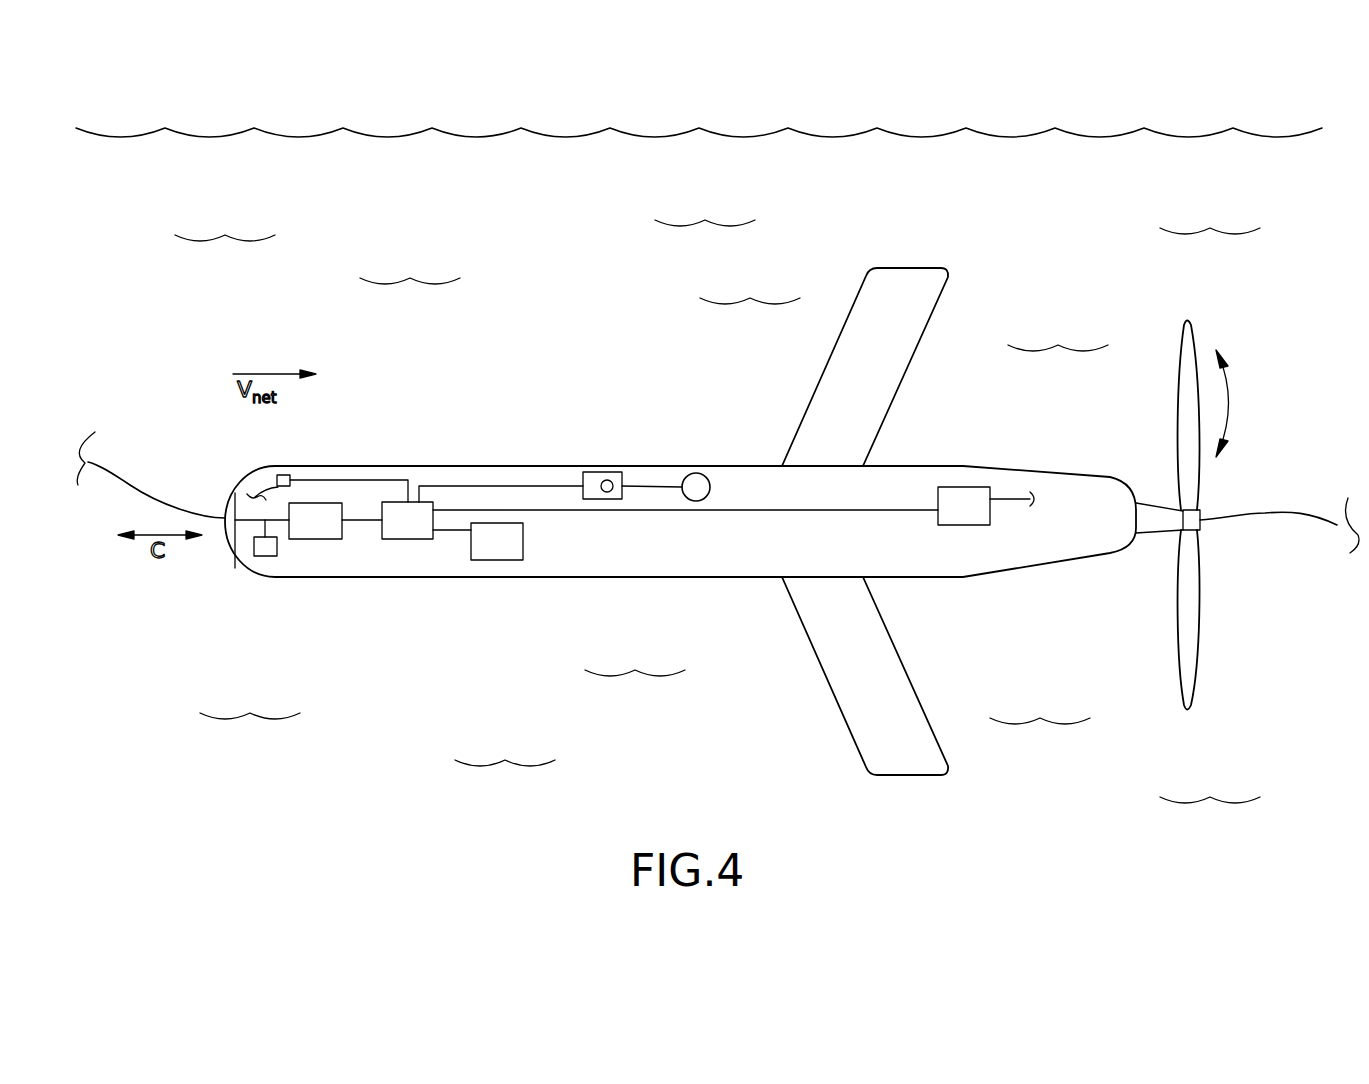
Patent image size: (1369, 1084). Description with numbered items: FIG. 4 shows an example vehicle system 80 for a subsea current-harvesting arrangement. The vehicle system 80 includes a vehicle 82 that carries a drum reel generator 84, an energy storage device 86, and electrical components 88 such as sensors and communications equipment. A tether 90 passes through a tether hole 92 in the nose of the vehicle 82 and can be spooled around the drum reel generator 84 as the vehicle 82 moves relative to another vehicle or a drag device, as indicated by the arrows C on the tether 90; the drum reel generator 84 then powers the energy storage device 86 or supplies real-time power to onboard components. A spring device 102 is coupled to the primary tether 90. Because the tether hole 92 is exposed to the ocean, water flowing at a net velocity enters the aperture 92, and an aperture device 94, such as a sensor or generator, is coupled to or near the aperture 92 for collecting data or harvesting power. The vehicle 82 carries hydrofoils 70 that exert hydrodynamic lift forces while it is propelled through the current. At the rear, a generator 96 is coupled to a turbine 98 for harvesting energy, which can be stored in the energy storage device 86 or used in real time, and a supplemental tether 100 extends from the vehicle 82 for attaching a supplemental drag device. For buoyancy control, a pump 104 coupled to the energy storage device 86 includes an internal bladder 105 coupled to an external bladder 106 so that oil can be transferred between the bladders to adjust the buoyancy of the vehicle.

The hydrofoil 70 is at (915, 267).
The vehicle system 80 is at (718, 484).
The vehicle 82 is at (484, 415).
The drum reel generator 84 is at (314, 541).
The energy storage device 86 is at (415, 541).
The electrical components 88 is at (503, 562).
The tether 90 is at (124, 482).
The tether hole 92 is at (228, 541).
The aperture device 94 is at (286, 473).
The generator 96 is at (968, 487).
The turbine 98 is at (1193, 630).
The supplemental tether 100 is at (1262, 512).
The spring device 102 is at (264, 558).
The pump 104 is at (600, 472).
The internal bladder 105 is at (609, 479).
The external bladder 106 is at (708, 473).